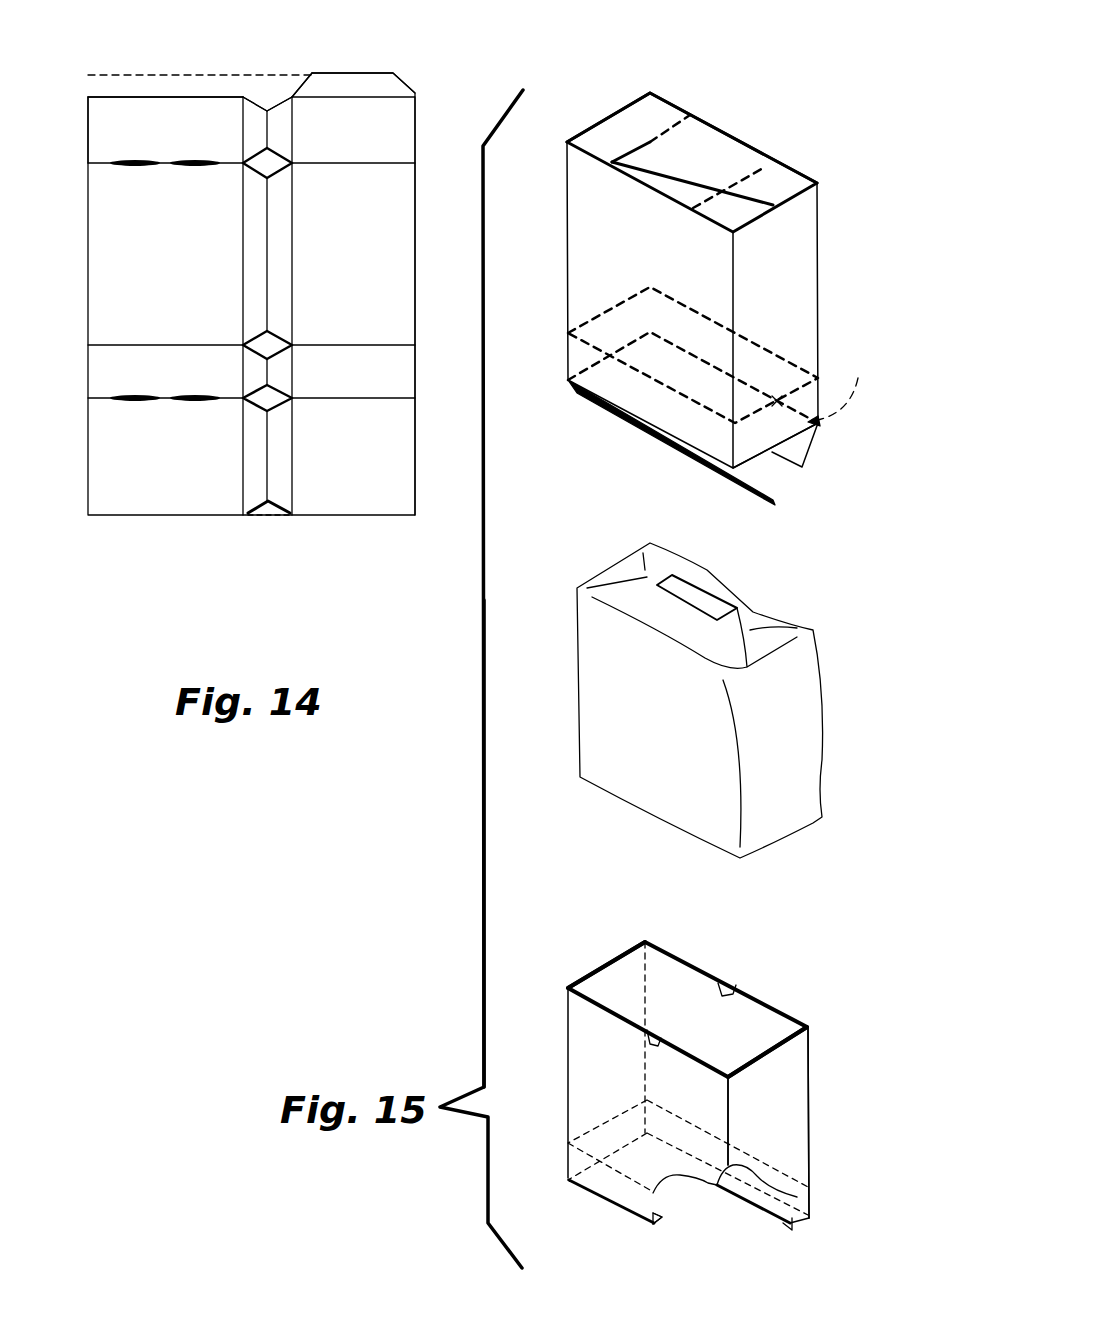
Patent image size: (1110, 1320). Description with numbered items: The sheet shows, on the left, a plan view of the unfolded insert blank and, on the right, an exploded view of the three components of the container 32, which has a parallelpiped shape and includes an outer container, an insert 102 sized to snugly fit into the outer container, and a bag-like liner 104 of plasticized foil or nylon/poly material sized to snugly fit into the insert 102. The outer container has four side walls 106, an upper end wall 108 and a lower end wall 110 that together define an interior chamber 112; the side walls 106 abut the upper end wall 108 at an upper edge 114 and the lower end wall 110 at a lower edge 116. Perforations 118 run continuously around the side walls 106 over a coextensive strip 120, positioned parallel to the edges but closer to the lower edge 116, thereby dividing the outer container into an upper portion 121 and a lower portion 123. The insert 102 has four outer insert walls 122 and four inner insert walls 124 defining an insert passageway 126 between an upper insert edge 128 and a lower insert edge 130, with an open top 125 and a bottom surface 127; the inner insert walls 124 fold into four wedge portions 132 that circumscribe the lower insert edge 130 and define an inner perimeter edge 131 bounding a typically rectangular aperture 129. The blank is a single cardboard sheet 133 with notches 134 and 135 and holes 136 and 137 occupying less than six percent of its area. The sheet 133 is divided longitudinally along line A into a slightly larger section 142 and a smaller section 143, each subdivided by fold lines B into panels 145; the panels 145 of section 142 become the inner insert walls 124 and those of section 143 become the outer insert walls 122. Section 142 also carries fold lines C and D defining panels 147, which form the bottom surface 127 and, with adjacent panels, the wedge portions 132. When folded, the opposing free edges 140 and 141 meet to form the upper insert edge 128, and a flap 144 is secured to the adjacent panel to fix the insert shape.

In FIG. 15, the container 32 is at (425, 1067).
In FIG. 15, the insert 102 is at (567, 1022).
In FIG. 15, the liner 104 is at (677, 768).
In FIG. 15, the side walls 106 is at (590, 250).
In FIG. 15, the upper end wall 108 is at (625, 135).
In FIG. 15, the lower end wall 110 is at (760, 490).
In FIG. 15, the interior chamber 112 is at (796, 455).
In FIG. 15, the upper edge 114 is at (580, 160).
In FIG. 15, the lower edge 116 is at (648, 418).
In FIG. 15, the perforations 118 is at (780, 400).
In FIG. 15, the strip 120 is at (845, 387).
In FIG. 15, the upper portion 121 is at (612, 178).
In FIG. 15, the outer insert walls 122 is at (778, 1088).
In FIG. 15, the lower portion 123 is at (607, 368).
In FIG. 15, the inner insert walls 124 is at (747, 1027).
In FIG. 15, the open top 125 is at (772, 1037).
In FIG. 15, the insert passageway 126 is at (775, 1028).
In FIG. 15, the bottom surface 127 is at (790, 1233).
In FIG. 15, the upper insert edge 128 is at (638, 940).
In FIG. 15, the aperture 129 is at (657, 1218).
In FIG. 15, the lower insert edge 130 is at (605, 1203).
In FIG. 15, the inner perimeter edge 131 is at (790, 1232).
In FIG. 15, the wedge portions 132 is at (645, 1100).
In FIG. 14, the sheet 133 is at (143, 90).
In FIG. 14, the notch 134 is at (259, 100).
In FIG. 14, the notch 135 is at (268, 508).
In FIG. 14, the hole 136 is at (276, 178).
In FIG. 14, the hole 137 is at (135, 175).
In FIG. 14, the free edge 140 is at (88, 316).
In FIG. 14, the free edge 141 is at (418, 298).
In FIG. 14, the section 142 is at (110, 125).
In FIG. 14, the section 143 is at (357, 90).
In FIG. 14, the flap 144 is at (312, 80).
In FIG. 14, the panels 145 is at (105, 145).
In FIG. 14, the panels 147 is at (247, 131).